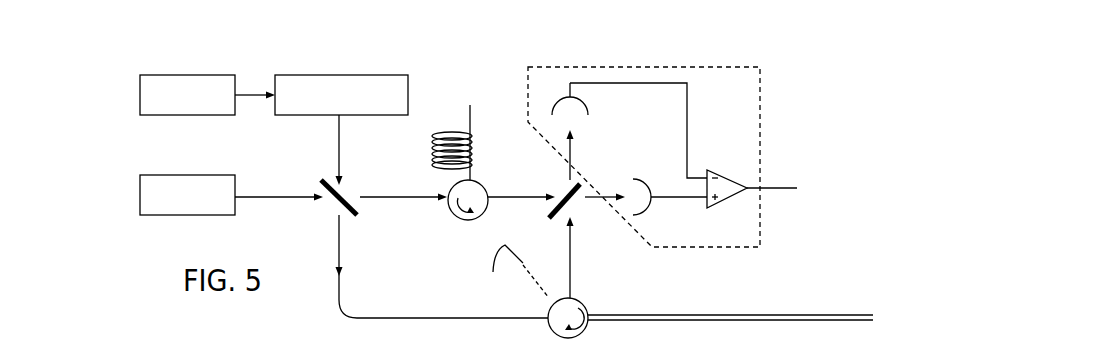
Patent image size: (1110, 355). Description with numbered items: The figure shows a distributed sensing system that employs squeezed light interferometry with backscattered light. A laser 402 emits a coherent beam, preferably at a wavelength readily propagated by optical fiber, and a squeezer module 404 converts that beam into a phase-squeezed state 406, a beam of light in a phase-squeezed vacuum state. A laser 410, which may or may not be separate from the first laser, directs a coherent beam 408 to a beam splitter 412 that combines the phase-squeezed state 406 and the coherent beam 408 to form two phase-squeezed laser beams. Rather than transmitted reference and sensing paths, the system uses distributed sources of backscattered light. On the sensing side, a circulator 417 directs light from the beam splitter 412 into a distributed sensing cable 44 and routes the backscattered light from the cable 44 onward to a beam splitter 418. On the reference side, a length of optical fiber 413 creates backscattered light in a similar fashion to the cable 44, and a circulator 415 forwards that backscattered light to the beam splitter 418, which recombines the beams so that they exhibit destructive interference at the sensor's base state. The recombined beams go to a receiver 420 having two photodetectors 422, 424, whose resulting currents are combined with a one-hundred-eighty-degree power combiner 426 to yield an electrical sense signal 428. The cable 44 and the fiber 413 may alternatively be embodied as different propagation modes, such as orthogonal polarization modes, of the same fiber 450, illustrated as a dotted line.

The laser 402 is at (172, 117).
The squeezer module 404 is at (378, 118).
The phase-squeezed state 406 is at (321, 150).
The coherent beam 408 is at (295, 204).
The laser 410 is at (172, 217).
The beam splitter 412 is at (355, 220).
The optical fiber 413 is at (455, 131).
The circulator 415 is at (497, 232).
The circulator 417 is at (553, 333).
The beam splitter 418 is at (548, 217).
The receiver 420 is at (688, 249).
The photodetector 422 is at (588, 117).
The photodetector 424 is at (648, 211).
The power combiner 426 is at (738, 214).
The output signal 428 is at (780, 191).
The distributed sensing cable 44 is at (688, 320).
The fiber 450 is at (513, 274).